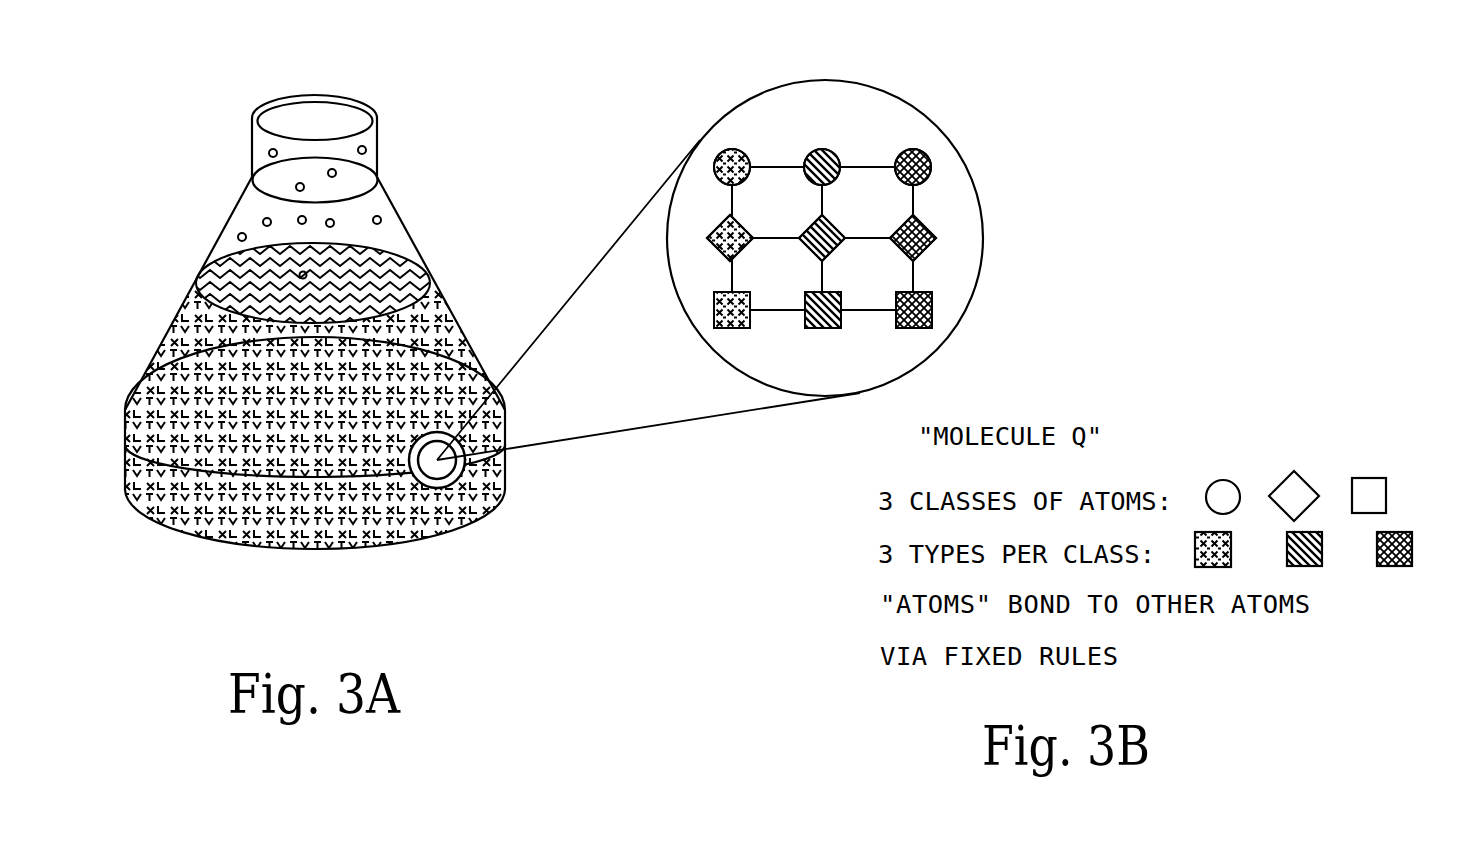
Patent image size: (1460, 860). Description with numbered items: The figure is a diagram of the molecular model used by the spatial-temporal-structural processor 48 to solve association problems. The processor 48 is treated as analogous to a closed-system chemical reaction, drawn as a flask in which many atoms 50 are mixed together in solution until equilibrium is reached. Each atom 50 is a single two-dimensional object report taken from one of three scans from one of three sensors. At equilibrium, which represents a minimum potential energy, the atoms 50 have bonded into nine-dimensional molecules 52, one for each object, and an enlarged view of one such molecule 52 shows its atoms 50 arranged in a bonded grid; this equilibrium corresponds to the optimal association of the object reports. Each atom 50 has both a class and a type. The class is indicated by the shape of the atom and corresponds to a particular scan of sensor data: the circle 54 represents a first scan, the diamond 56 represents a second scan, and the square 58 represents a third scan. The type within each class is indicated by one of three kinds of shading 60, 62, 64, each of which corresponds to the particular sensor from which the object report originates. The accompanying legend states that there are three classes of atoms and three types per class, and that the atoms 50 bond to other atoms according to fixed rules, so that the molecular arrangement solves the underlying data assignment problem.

In FIG. 3A, the spatial-temporal-structural (STS) processor 48 is at (223, 155).
In FIG. 3A, the atoms 50 is at (242, 237).
In FIG. 3A, the molecules 52 is at (866, 85).
In FIG. 3B, the circle 54 is at (1223, 480).
In FIG. 3B, the diamond 56 is at (1284, 483).
In FIG. 3B, the square 58 is at (1362, 477).
In FIG. 3B, the first type of shading 60 is at (1232, 553).
In FIG. 3B, the second type of shading 62 is at (1322, 553).
In FIG. 3B, the third type of shading 64 is at (1412, 545).